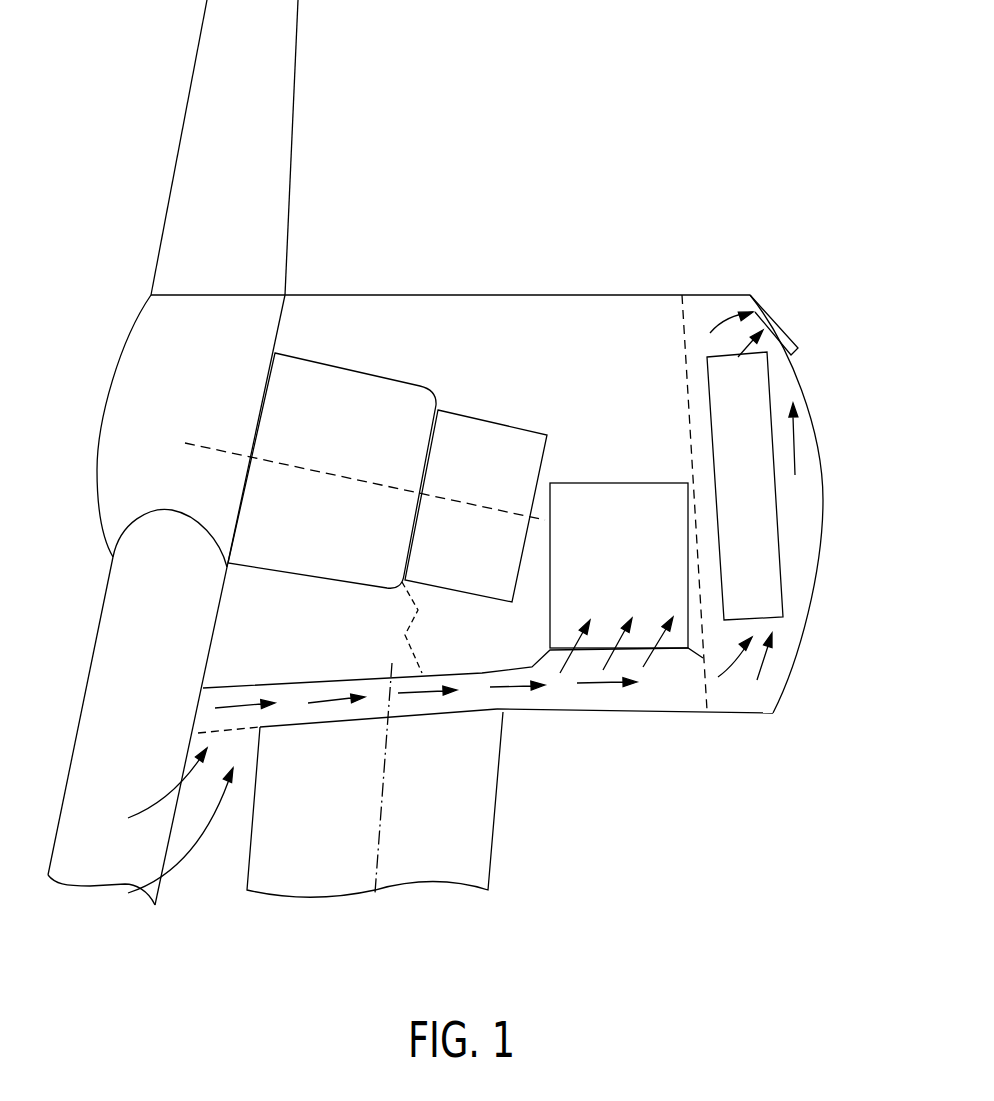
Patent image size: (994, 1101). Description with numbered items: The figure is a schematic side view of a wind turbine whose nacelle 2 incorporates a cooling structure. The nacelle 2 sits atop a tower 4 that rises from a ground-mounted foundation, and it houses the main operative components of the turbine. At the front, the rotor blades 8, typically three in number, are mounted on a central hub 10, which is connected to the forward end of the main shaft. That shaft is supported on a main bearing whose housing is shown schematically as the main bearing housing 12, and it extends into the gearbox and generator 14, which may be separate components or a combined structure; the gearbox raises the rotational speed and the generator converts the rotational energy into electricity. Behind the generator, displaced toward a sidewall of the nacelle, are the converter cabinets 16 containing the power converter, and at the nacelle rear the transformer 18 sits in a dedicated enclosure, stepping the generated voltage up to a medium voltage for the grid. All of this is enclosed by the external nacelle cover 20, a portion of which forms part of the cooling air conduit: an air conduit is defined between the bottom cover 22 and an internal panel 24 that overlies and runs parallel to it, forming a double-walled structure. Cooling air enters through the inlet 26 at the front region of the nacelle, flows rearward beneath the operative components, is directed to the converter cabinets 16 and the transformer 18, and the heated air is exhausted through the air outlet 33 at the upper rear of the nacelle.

The nacelle 2 is at (662, 170).
The tower 4 is at (480, 843).
The blades 8 is at (207, 98).
The hub 10 is at (157, 340).
The main bearing housing 12 is at (358, 388).
The gearbox and generator 14 is at (490, 443).
The converter cabinets 16 is at (583, 497).
The transformer 18 is at (753, 535).
The nacelle cover 20 is at (653, 295).
The bottom cover 22 is at (657, 712).
The internal panel 24 is at (478, 674).
The inlet 26 is at (233, 735).
The air outlet 33 is at (773, 310).